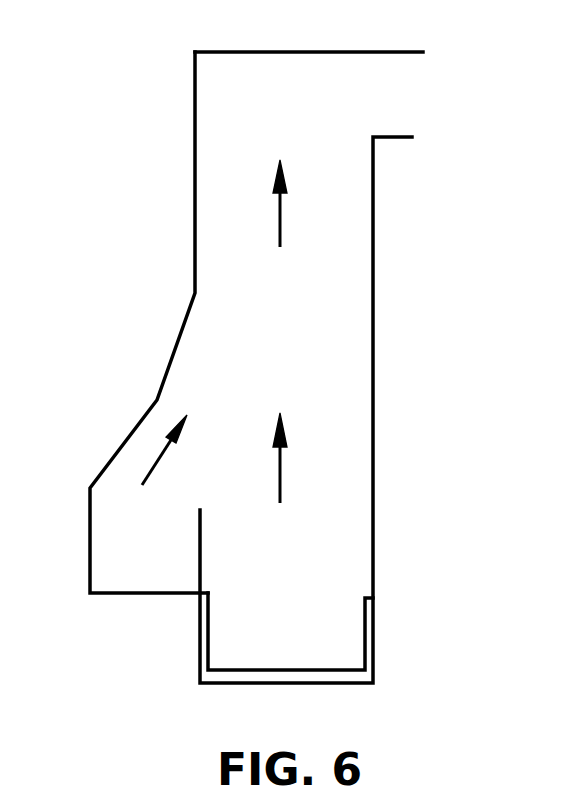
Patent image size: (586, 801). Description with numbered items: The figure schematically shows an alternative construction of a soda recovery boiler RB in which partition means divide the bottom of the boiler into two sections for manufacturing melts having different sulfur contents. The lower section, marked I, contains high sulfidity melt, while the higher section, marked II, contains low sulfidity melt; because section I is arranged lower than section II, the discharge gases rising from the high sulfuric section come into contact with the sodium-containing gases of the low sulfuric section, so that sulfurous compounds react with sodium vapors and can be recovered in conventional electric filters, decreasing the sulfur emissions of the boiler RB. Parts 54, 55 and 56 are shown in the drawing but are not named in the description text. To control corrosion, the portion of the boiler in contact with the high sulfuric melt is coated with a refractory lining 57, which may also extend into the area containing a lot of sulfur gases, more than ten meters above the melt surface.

The trough (zone I) 54 is at (351, 625).
The chamber wall (zone II) 55 is at (74, 541).
The riser passage 56 is at (350, 240).
The refractory lining 57 is at (203, 647).
The soda recovery boiler RB is at (136, 300).